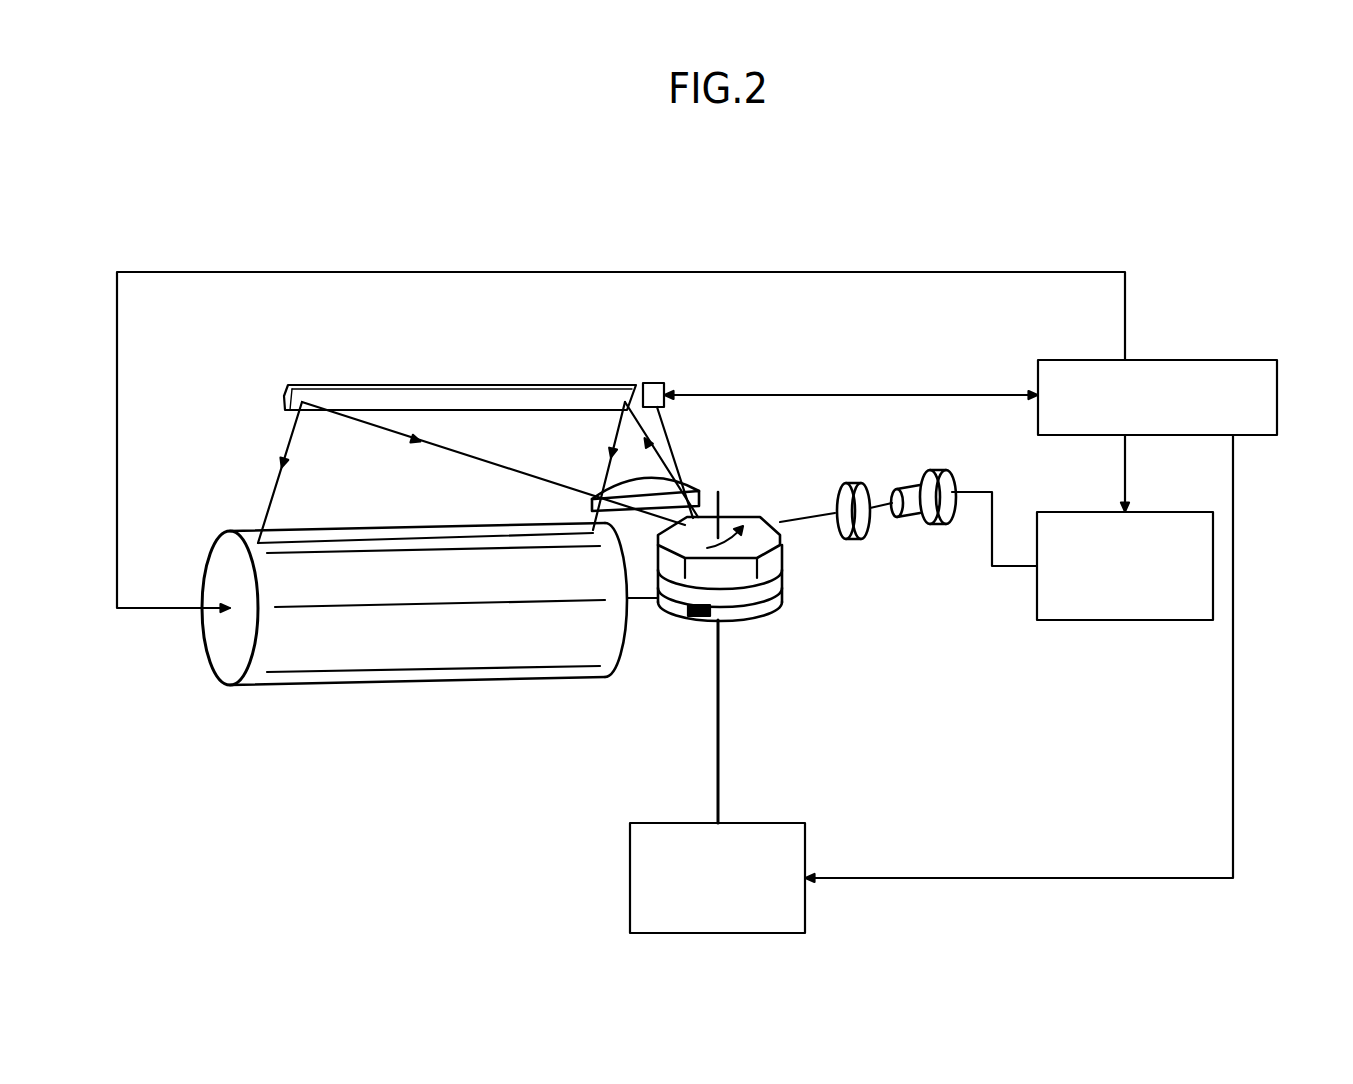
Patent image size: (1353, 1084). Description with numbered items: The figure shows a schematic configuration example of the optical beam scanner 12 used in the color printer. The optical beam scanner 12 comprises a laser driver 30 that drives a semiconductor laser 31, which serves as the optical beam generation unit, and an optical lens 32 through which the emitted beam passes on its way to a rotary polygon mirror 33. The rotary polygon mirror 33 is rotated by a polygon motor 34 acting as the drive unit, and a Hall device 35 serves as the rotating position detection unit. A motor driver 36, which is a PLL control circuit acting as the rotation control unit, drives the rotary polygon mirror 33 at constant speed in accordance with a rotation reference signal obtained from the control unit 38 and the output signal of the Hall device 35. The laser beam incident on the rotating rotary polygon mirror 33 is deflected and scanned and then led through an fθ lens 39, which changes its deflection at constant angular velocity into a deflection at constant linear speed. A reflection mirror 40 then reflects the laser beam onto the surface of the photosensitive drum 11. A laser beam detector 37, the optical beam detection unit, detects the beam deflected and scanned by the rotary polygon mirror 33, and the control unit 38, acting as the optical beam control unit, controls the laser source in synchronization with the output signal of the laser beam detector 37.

The photosensitive drum 11 is at (228, 645).
The optical beam scanner 12 is at (913, 232).
The laser driver 30 is at (1150, 512).
The semiconductor laser 31 is at (935, 525).
The optical lens 32 is at (852, 540).
The rotary polygon mirror 33 is at (745, 515).
The polygon motor 34 is at (762, 622).
The Hall device 35 is at (693, 617).
The motor driver 36 is at (758, 823).
The laser beam detector 37 is at (652, 383).
The control unit 38 is at (1207, 360).
The fθ lens 39 is at (592, 510).
The reflection mirror 40 is at (395, 383).